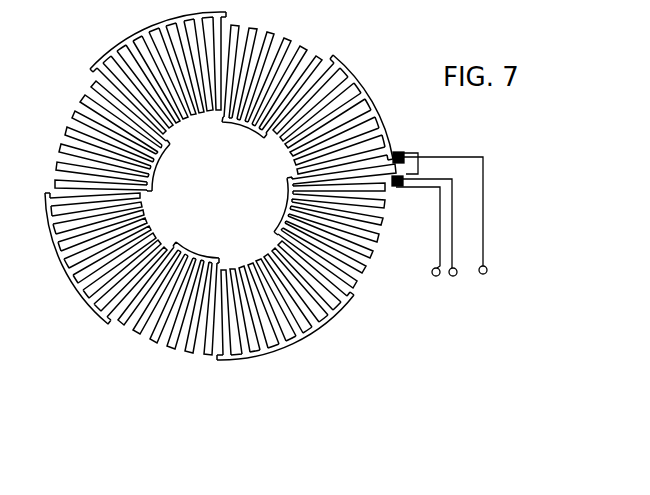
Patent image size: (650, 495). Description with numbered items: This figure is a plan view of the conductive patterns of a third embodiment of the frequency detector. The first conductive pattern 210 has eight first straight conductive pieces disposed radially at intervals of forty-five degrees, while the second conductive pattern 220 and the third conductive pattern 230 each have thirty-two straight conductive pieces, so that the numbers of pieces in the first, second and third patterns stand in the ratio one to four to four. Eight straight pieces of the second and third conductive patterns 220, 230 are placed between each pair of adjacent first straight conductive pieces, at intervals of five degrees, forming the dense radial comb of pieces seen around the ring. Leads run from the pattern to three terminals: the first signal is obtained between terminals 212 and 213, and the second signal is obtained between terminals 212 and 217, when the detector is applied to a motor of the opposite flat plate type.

The first conductive pattern 210 is at (220, 206).
The terminal 212 is at (486, 275).
The terminal 213 is at (432, 277).
The terminal 217 is at (453, 277).
The second conductive pattern 220 is at (157, 344).
The third conductive pattern 230 is at (114, 290).